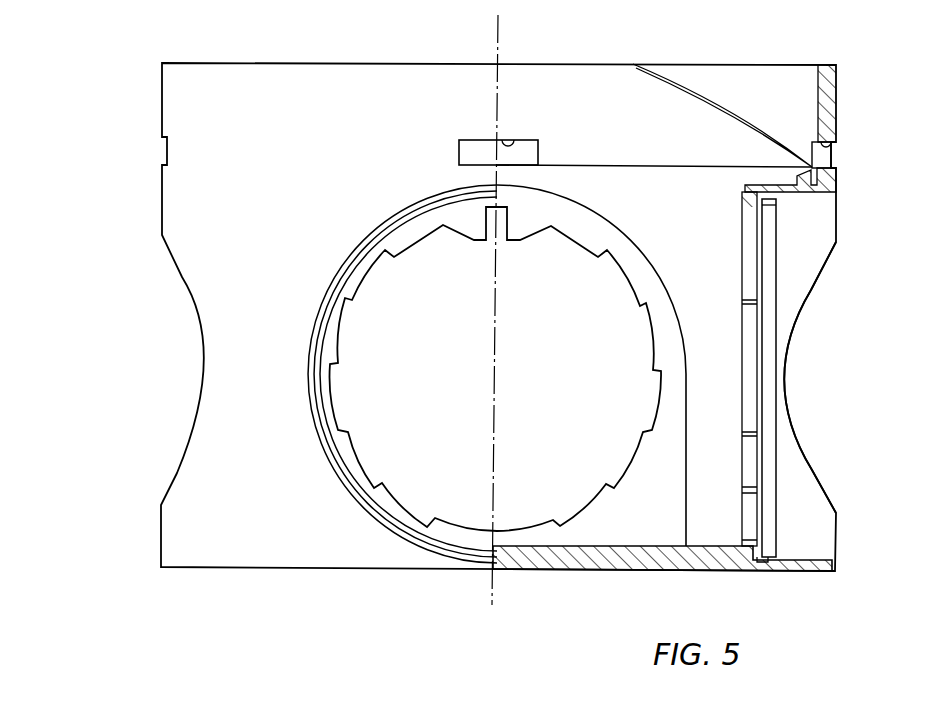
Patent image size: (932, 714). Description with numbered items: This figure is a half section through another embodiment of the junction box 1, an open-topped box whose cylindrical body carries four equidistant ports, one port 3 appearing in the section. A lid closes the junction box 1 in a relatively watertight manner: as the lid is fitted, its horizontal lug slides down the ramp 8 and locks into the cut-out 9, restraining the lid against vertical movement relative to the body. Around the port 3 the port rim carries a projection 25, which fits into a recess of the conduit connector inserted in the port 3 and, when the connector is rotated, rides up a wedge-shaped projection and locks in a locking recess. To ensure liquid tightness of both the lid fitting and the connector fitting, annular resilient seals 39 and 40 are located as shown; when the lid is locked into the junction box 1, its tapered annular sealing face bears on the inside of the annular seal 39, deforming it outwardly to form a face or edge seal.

The junction box 1 is at (128, 377).
The port 3 is at (840, 343).
The ramp 8 is at (748, 122).
The cut-out 9 is at (517, 140).
The projection 25 is at (468, 228).
The annular resilient seal 39 is at (795, 197).
The annular resilient seal 40 is at (768, 545).